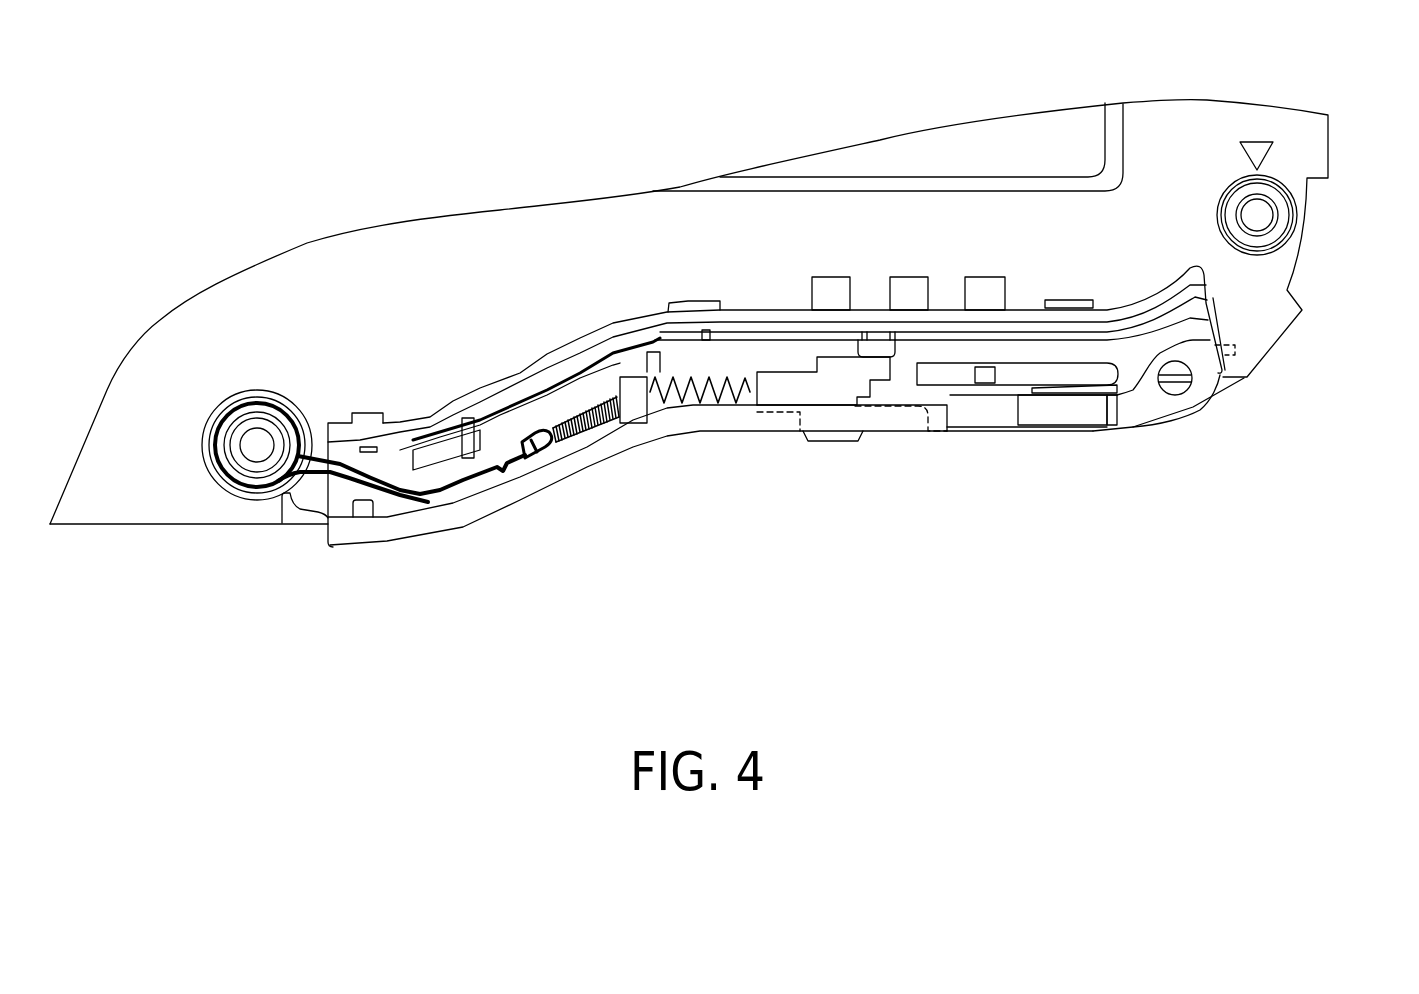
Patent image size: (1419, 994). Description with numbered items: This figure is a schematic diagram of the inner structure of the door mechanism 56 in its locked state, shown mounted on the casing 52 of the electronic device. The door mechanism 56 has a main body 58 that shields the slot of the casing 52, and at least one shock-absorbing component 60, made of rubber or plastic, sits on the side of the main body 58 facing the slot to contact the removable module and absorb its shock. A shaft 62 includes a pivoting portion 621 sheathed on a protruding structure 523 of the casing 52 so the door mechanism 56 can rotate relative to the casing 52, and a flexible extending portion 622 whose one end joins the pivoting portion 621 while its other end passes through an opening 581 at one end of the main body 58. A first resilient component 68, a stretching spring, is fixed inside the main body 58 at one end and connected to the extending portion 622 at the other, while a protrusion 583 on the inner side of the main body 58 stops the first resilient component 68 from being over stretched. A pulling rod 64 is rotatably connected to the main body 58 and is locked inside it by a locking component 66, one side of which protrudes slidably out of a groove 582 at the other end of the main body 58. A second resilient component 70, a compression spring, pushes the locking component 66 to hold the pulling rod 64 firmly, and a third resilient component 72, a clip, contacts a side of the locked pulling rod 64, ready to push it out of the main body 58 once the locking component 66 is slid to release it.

The casing 52 is at (1268, 330).
The protruding structure 523 is at (238, 460).
The door mechanism 56 is at (1260, 467).
The main body 58 is at (738, 440).
The opening 581 is at (323, 495).
The groove 582 is at (918, 430).
The protrusion 583 is at (365, 512).
The shock-absorbing component 60 is at (993, 290).
The shaft 62 is at (377, 567).
The pivoting portion 621 is at (258, 487).
The extending portion 622 is at (473, 473).
The pulling rod 64 is at (1090, 417).
The locking component 66 is at (832, 440).
The first resilient component 68 is at (597, 432).
The second resilient component 70 is at (697, 408).
The third resilient component 72 is at (1212, 357).